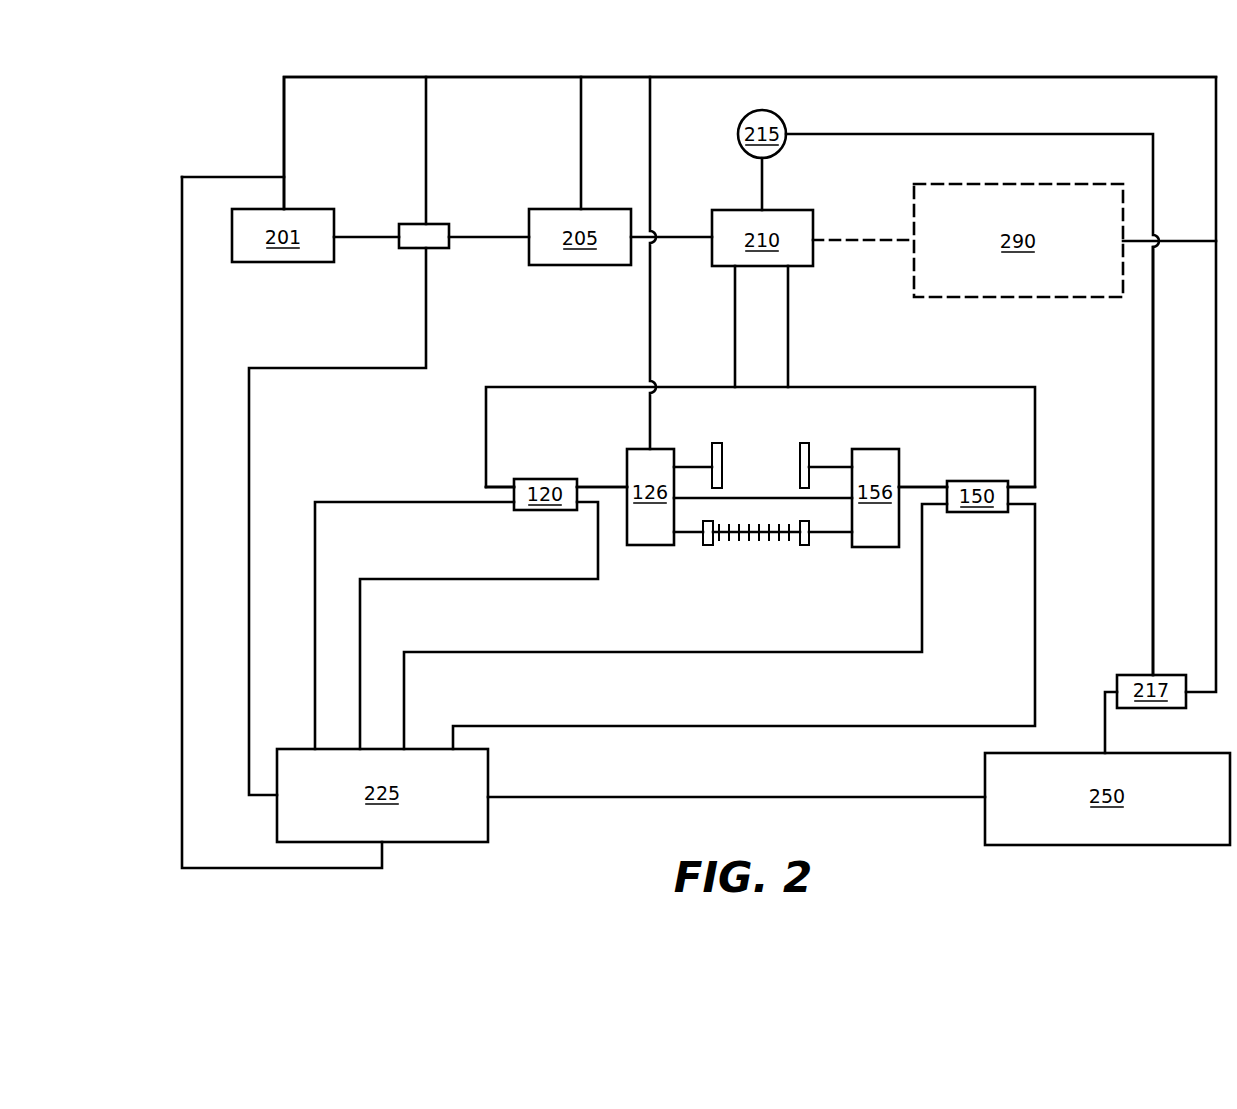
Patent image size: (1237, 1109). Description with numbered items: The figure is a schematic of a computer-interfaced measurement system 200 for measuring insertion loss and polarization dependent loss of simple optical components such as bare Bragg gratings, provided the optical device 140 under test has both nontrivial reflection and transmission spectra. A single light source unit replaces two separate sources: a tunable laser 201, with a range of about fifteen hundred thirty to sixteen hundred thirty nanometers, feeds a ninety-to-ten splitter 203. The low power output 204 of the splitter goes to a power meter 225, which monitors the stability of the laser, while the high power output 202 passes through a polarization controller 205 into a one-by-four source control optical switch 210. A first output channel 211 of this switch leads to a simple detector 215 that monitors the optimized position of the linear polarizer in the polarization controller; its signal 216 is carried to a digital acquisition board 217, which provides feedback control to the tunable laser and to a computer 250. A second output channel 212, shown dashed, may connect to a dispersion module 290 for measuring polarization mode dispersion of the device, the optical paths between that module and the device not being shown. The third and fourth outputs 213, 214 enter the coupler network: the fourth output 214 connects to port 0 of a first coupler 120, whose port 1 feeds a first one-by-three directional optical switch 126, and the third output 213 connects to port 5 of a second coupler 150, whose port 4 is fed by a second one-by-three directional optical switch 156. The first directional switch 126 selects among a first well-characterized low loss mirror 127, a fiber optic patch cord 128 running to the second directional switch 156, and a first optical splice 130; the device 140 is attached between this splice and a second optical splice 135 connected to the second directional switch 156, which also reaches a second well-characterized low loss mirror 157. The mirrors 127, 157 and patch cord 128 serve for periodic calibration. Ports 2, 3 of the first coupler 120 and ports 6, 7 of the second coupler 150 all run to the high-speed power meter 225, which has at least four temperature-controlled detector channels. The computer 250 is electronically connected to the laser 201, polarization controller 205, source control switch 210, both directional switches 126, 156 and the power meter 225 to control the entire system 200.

The measurement system 200 is at (540, 835).
The tunable laser 201 is at (283, 235).
The high power output 202 is at (482, 236).
The 90/10 splitter 203 is at (412, 223).
The low power output 204 is at (428, 290).
The polarization controller 205 is at (620, 237).
The 1-by-4 source control optical switch 210 is at (762, 238).
The first output channel 211 is at (764, 177).
The second output channel 212 is at (861, 239).
The third output 213 is at (790, 316).
The fourth output 214 is at (733, 316).
The simple detector 215 is at (948, 392).
The signal 216 is at (1151, 648).
The digital acquisition (DAQ) board 217 is at (1151, 691).
The power meter 225 is at (631, 795).
The computer 250 is at (1107, 768).
The dispersion module 290 is at (1065, 240).
The first coupler 120 is at (545, 494).
The first 1-by-3 directional optical switch 126 is at (625, 497).
The first well-characterized low loss mirror 127 is at (716, 442).
The fiber optic patch cord 128 is at (753, 497).
The first optical splice 130 is at (706, 546).
The second optical splice 135 is at (805, 546).
The optical device 140 is at (752, 546).
The second coupler 150 is at (977, 496).
The second 1-by-3 directional optical switch 156 is at (899, 498).
The second well-characterized low loss mirror 157 is at (803, 442).
The port 0 is at (502, 485).
The port 1 is at (600, 485).
The port 2 is at (582, 512).
The port 3 is at (490, 504).
The port 4 is at (924, 485).
The port 5 is at (1019, 485).
The port 6 is at (1020, 506).
The port 7 is at (940, 506).